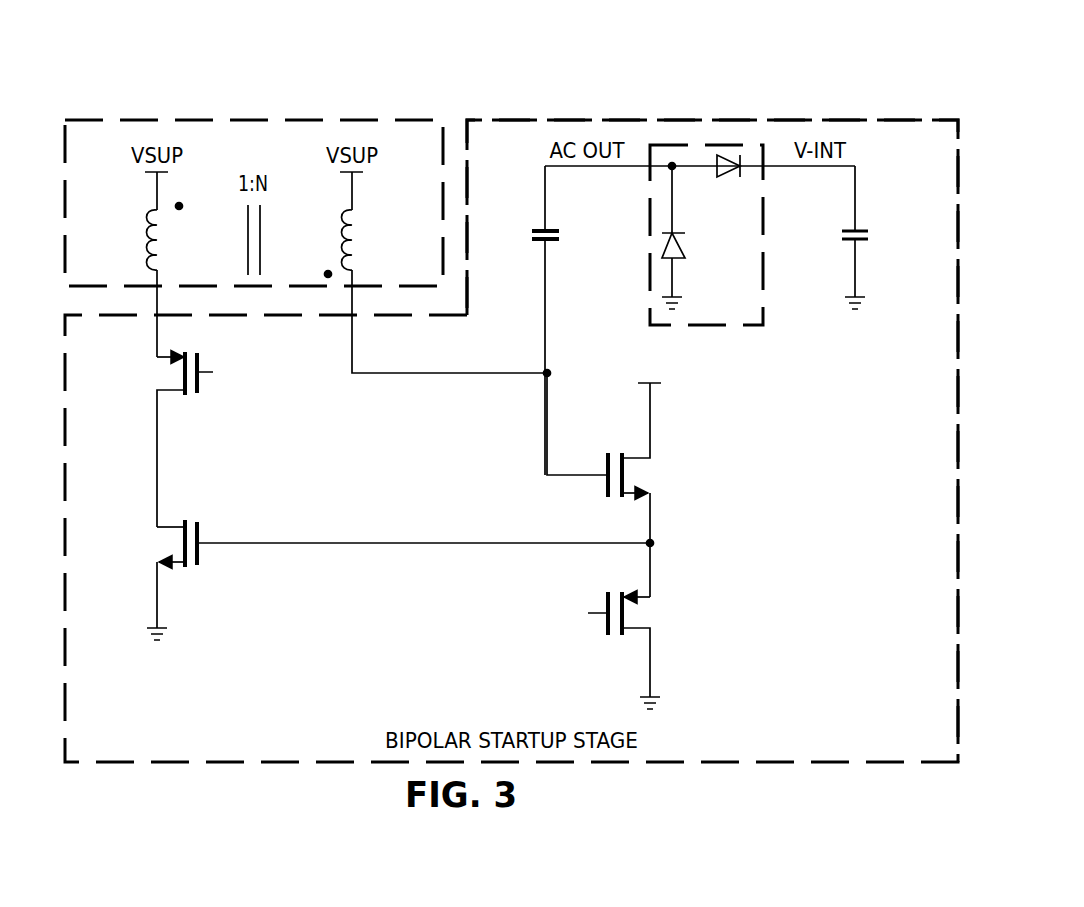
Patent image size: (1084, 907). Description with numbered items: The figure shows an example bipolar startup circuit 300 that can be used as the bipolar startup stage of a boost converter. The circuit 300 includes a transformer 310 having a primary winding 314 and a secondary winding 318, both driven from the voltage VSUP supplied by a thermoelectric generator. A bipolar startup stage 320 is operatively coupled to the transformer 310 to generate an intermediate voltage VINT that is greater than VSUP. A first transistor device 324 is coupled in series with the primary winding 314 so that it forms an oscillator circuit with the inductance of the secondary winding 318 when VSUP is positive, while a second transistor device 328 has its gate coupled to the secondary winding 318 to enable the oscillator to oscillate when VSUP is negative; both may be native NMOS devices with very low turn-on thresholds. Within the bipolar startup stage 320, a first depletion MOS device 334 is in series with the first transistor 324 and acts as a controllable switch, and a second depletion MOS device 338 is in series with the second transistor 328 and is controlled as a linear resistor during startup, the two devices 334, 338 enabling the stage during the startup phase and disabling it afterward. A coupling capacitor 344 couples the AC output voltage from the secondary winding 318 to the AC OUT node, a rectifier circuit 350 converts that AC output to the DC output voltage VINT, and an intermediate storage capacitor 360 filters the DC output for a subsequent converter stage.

The bipolar startup circuit 300 is at (100, 63).
The transformer 310 is at (203, 118).
The primary winding 314 is at (150, 240).
The secondary winding 318 is at (359, 240).
The bipolar startup stage 320 is at (800, 118).
The first transistor device 324 is at (199, 560).
The second transistor device 328 is at (605, 488).
The first depletion MOS device 334 is at (199, 395).
The second depletion MOS device 338 is at (609, 636).
The coupling capacitor 344 is at (562, 234).
The rectifier circuit 350 is at (710, 328).
The intermediate storage capacitor 360 is at (871, 234).